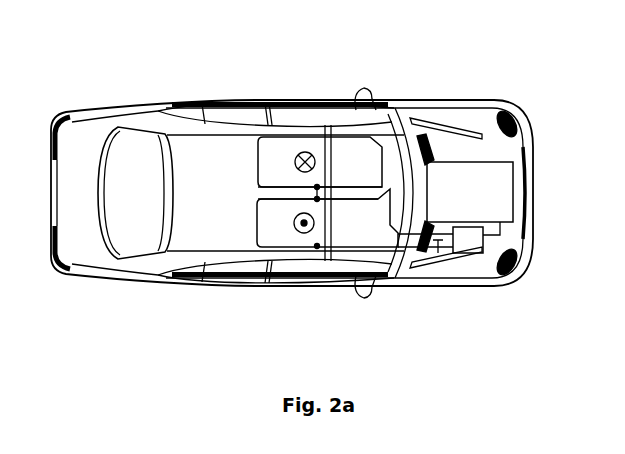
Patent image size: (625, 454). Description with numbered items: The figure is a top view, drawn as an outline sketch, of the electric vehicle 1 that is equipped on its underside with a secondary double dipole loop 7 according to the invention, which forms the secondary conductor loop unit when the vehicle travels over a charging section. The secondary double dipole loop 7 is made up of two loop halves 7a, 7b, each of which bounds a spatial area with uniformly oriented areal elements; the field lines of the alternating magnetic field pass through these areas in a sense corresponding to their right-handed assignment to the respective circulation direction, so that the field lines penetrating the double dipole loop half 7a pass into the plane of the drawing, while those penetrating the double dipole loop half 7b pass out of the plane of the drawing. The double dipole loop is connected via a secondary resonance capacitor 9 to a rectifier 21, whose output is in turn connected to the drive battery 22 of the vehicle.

The electric vehicle 1 is at (398, 101).
The secondary double dipole loop 7 is at (342, 125).
The double dipole loop half 7a is at (284, 158).
The double dipole loop half 7b is at (290, 215).
The secondary resonance capacitor 9 is at (436, 268).
The rectifier 21 is at (466, 240).
The drive battery 22 is at (461, 183).